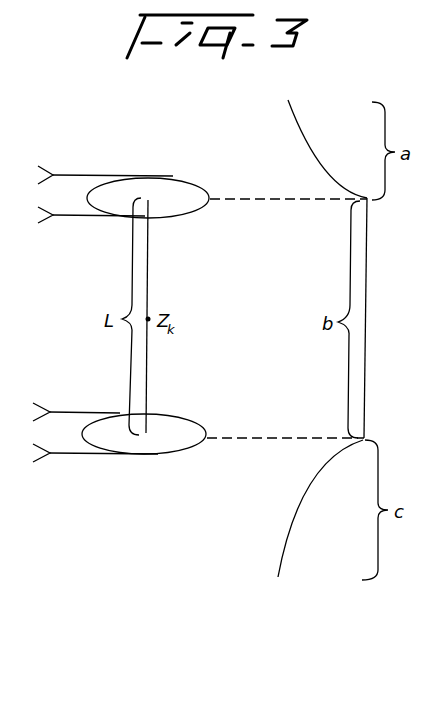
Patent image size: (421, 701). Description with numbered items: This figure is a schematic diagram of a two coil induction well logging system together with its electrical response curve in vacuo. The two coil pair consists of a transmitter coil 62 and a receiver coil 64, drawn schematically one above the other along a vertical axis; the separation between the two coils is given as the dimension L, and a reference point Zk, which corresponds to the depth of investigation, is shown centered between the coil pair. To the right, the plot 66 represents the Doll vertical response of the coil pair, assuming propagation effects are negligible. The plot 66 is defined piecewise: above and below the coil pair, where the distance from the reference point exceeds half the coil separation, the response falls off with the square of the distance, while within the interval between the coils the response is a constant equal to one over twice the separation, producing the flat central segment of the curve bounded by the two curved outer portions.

The transmitter coil 62 is at (173, 177).
The receiver coil 64 is at (158, 455).
The plot 66 is at (365, 300).